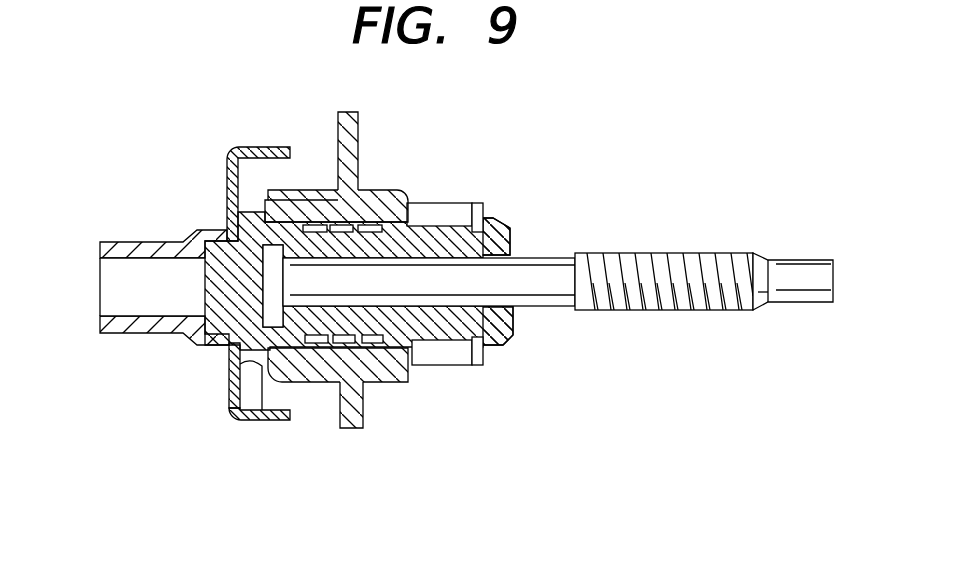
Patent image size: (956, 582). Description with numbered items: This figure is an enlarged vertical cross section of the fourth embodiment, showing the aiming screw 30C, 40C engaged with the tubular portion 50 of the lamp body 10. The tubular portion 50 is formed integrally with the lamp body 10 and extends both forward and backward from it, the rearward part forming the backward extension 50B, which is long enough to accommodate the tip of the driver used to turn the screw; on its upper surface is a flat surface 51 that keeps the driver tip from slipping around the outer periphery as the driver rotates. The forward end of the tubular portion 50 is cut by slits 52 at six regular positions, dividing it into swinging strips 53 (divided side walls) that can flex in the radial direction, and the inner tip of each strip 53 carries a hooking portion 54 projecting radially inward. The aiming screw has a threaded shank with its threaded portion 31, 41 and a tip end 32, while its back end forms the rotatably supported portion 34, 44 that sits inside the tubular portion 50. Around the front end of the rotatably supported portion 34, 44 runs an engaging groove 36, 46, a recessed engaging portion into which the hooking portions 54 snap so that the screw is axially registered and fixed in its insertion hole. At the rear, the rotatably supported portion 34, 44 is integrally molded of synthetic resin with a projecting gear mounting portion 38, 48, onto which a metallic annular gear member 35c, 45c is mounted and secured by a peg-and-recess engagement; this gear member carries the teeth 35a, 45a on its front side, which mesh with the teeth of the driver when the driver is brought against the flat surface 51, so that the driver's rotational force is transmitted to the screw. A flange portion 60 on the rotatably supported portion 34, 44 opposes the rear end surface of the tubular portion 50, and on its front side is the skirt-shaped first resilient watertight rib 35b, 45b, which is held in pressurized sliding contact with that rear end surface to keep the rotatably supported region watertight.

The lamp body 10 is at (350, 137).
The aiming screw 30C is at (558, 282).
The aiming screw 40C is at (558, 282).
The threaded portion of rod 31 is at (664, 336).
The threaded portion (alternative embodiment) 41 is at (654, 322).
The rod end portion 32 is at (733, 312).
The rotatably supported portion 34 is at (419, 323).
The rotatably supported portion 44 is at (520, 350).
The teeth 35a is at (268, 475).
The teeth 45a is at (282, 422).
The first resilient watertight rib 35b is at (212, 442).
The first resilient watertight rib 45b is at (212, 442).
The metallic annular gear member 35c is at (229, 145).
The metallic annular gear member 45c is at (247, 136).
The engaging groove 36 is at (562, 258).
The engaging groove 46 is at (486, 212).
The gear mounting portion 38 is at (144, 270).
The gear mounting portion 48 is at (128, 278).
The tubular portion 50 is at (373, 428).
The backward extension 50B is at (300, 393).
The flat surface 51 is at (312, 190).
The slits 52 is at (474, 203).
The swinging strips 53 is at (445, 200).
The hooking portion 54 is at (512, 242).
The flange portion 60 is at (229, 388).